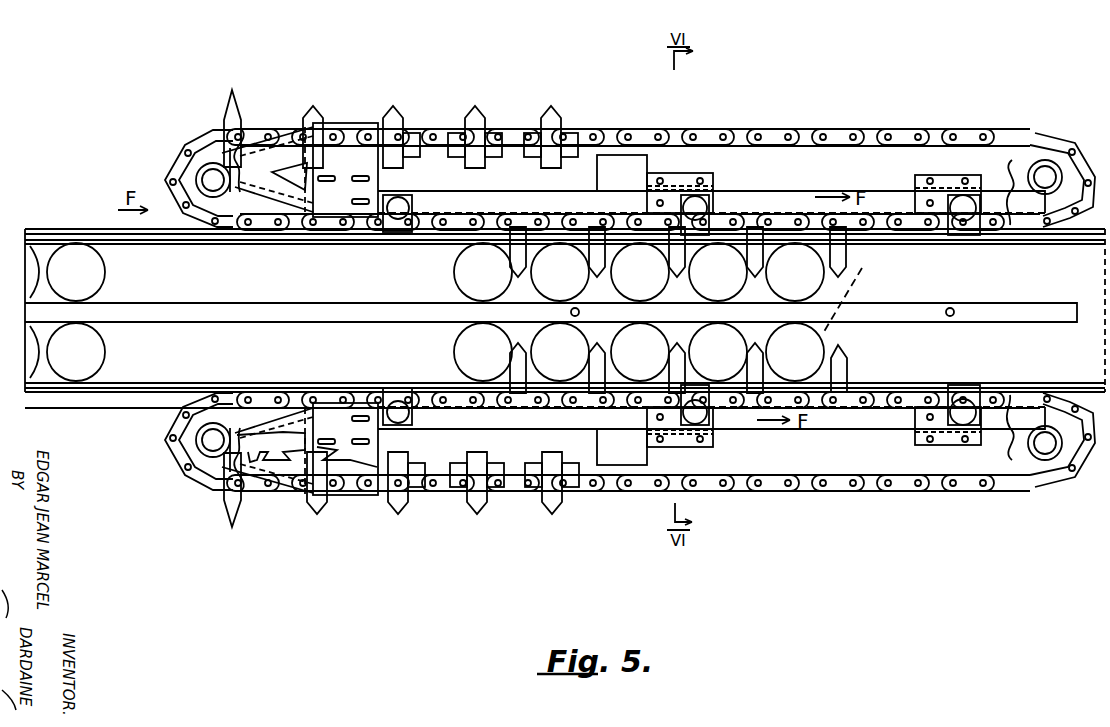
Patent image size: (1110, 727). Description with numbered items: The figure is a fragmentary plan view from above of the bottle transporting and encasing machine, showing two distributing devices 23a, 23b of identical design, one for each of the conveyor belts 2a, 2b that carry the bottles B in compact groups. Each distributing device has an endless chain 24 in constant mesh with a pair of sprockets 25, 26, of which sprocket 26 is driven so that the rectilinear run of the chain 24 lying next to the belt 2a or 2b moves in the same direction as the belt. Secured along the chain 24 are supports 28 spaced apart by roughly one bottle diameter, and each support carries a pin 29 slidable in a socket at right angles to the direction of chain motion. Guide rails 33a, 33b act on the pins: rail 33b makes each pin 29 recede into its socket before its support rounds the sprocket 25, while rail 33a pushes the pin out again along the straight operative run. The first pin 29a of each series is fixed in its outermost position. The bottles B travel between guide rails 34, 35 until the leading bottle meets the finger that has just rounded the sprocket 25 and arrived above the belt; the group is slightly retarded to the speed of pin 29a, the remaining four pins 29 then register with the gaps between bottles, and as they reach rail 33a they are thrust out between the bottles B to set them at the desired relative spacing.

The belt 2a is at (103, 258).
The belt 2b is at (126, 358).
The distributing device 23a is at (687, 120).
The distributing device 23b is at (627, 498).
The endless chain 24 is at (426, 130).
The sprocket 25 is at (200, 135).
The sprocket 26 is at (1040, 143).
The supports 28 is at (566, 150).
The pins 29 is at (318, 113).
The first pin 29a is at (235, 105).
The guide rail 33a is at (277, 217).
The guide rail 33b is at (269, 160).
The guide rail 34 is at (943, 237).
The guide rail 35 is at (1010, 306).
The bottles B is at (852, 296).